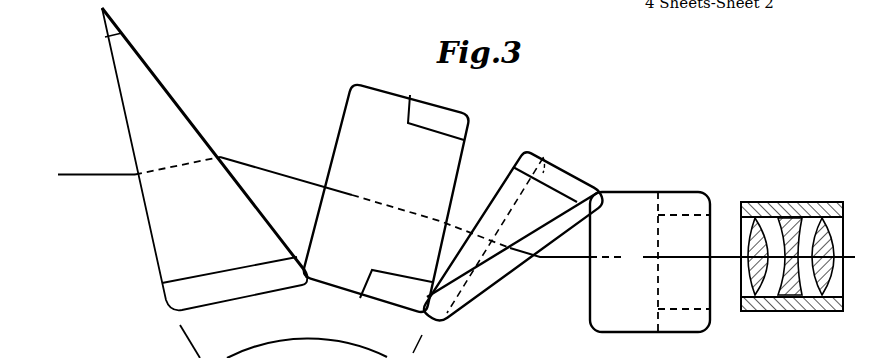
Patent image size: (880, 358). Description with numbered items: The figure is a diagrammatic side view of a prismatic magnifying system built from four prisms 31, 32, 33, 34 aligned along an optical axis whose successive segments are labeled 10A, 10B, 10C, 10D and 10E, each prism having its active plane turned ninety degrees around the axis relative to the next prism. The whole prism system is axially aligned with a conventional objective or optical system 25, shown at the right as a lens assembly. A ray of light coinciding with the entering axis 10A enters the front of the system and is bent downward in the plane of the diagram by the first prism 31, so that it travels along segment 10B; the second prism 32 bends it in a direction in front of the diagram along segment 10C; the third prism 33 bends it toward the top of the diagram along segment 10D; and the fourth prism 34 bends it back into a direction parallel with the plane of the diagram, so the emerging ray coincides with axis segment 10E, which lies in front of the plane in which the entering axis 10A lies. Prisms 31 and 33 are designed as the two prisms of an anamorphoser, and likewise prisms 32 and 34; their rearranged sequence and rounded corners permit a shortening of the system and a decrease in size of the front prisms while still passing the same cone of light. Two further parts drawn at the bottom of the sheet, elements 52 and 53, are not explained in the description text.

The first prism 31 is at (137, 62).
The second prism 32 is at (387, 93).
The third prism 33 is at (553, 177).
The fourth prism 34 is at (678, 198).
The objective or optical system 25 is at (780, 310).
The optical axis segment 10A is at (100, 175).
The optical axis segment 10B is at (277, 173).
The optical axis segment 10C is at (457, 223).
The optical axis segment 10D is at (553, 258).
The optical axis segment 10E is at (723, 258).
The curved support member 52 is at (413, 352).
The support arm 53 is at (185, 340).